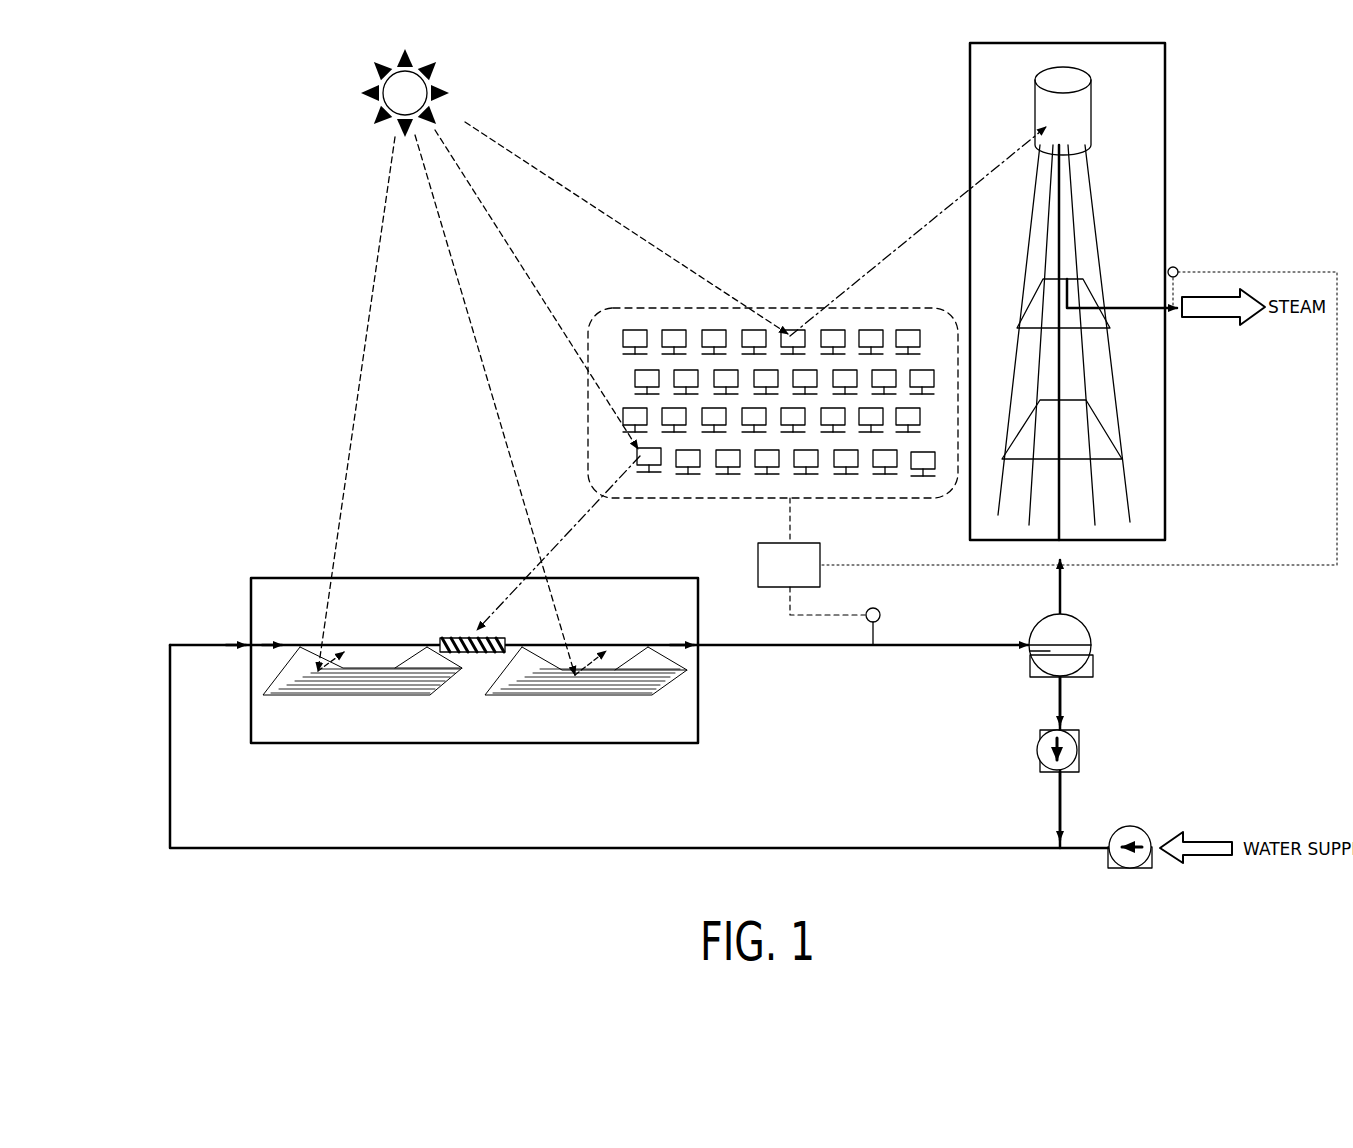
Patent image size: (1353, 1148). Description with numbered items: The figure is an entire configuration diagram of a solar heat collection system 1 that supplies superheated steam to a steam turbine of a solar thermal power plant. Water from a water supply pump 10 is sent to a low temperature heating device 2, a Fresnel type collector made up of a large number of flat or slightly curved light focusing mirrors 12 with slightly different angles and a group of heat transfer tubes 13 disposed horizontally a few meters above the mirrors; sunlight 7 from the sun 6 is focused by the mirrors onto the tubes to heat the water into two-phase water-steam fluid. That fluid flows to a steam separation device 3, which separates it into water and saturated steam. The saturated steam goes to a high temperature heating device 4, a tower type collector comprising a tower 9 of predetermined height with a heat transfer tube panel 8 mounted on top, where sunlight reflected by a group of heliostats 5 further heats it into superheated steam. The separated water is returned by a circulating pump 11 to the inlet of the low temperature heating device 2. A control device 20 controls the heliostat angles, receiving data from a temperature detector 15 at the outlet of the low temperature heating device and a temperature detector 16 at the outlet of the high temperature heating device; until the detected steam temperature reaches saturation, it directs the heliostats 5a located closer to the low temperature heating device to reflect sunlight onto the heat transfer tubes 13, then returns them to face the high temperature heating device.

The solar heat collection system 1 is at (742, 134).
The low temperature heating device 2 is at (445, 745).
The steam separation device 3 is at (1085, 625).
The high temperature heating device 4 is at (1167, 156).
The heliostats 5 is at (664, 308).
The heliostats 5a is at (640, 452).
The sun 6 is at (372, 95).
The sunlight 7 is at (549, 178).
The heat transfer tube panel 8 is at (1036, 110).
The tower 9 is at (1031, 258).
The water supply pump 10 is at (1140, 826).
The circulating pump 11 is at (1078, 750).
The light focusing mirrors 12 is at (370, 698).
The heat transfer tubes 13 is at (459, 639).
The temperature detector 15 is at (880, 610).
The temperature detector 16 is at (1177, 268).
The control device 20 is at (758, 566).